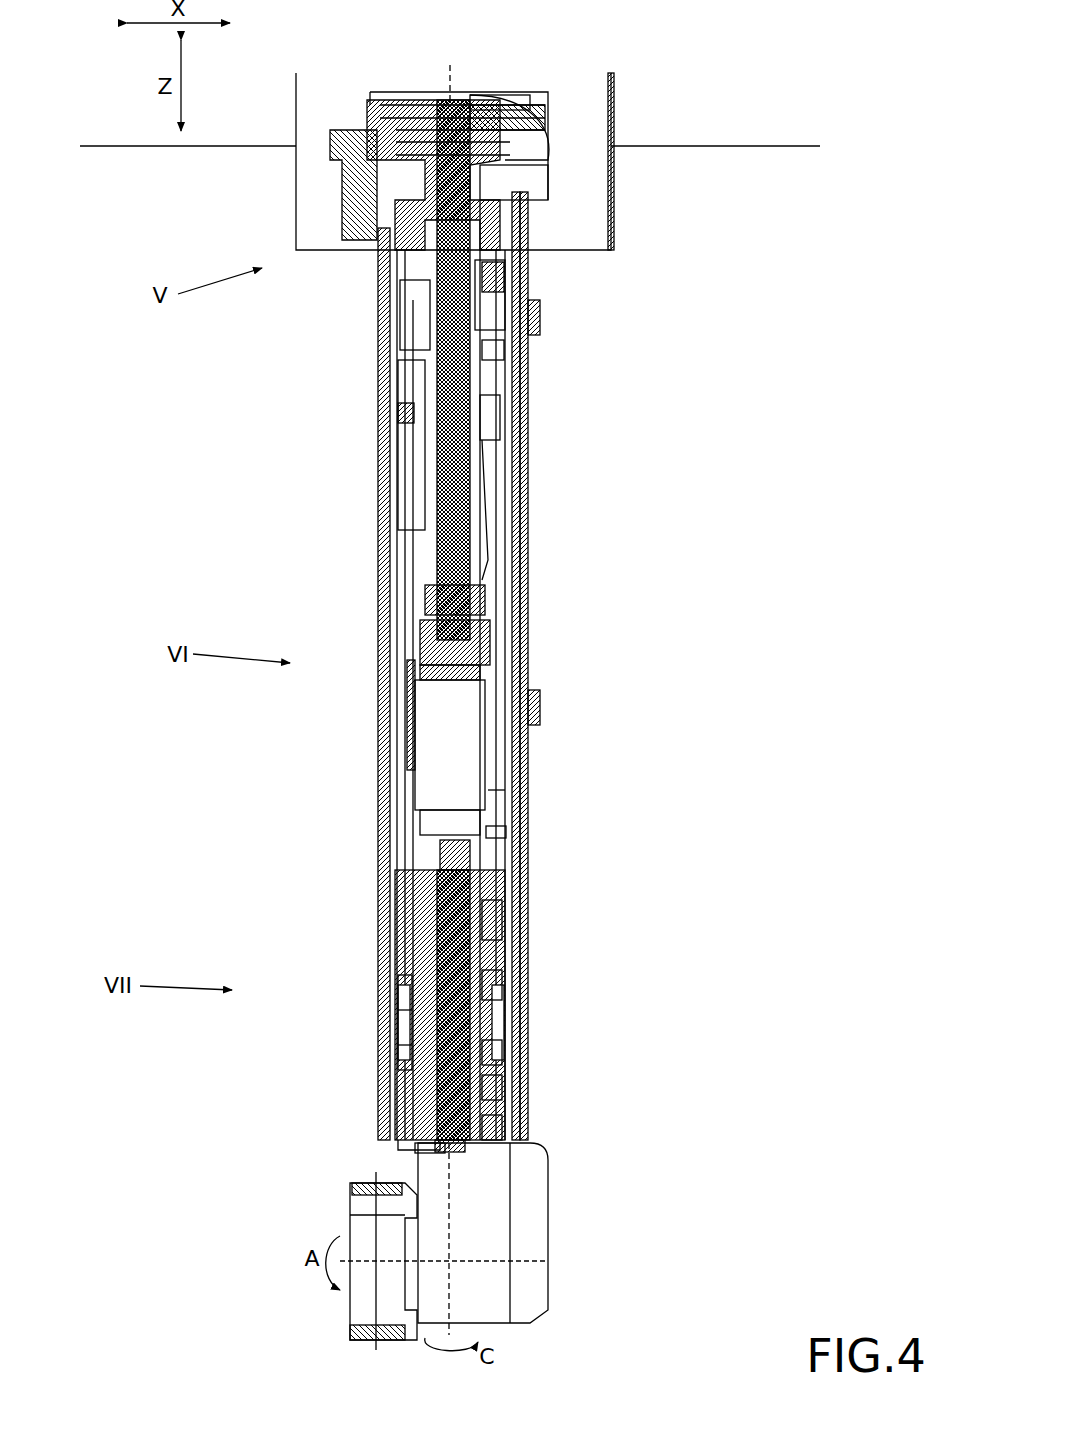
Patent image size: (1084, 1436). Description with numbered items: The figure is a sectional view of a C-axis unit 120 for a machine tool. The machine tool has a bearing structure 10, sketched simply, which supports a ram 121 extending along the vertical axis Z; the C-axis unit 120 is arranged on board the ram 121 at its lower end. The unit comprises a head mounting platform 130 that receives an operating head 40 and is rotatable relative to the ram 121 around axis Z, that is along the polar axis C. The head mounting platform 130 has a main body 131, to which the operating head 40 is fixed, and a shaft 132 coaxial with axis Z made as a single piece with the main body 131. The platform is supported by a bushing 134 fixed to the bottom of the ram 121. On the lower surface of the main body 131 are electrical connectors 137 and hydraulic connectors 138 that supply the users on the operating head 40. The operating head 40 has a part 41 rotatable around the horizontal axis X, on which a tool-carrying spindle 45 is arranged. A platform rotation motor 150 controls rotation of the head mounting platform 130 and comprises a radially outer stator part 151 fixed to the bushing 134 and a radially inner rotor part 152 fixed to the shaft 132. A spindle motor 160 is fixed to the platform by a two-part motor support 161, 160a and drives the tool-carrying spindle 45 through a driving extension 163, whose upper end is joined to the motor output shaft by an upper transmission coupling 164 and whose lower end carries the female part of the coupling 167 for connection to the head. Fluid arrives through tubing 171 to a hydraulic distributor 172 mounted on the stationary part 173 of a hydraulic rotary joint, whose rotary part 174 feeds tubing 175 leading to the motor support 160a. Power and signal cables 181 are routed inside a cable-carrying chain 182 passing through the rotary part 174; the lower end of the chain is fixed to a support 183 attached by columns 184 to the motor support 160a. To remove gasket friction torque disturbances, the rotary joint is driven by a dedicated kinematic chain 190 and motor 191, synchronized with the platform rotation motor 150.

The bearing structure 10 is at (181, 152).
The operating head 40 is at (554, 1247).
The part of the operating head 41 is at (348, 1305).
The tool-carrying spindle 45 is at (360, 1335).
The C-axis unit 120 is at (607, 1011).
The support group (ram) 121 is at (530, 508).
The head mounting platform 130 is at (368, 1111).
The main body 131 is at (528, 1083).
The shaft 132 is at (528, 950).
The bushing 134 is at (528, 985).
The electrical connectors 137 is at (405, 1148).
The hydraulic connectors 138 is at (528, 1130).
The platform rotation motor 150 is at (380, 990).
The stator part 151 is at (380, 1017).
The rotor part 152 is at (380, 1048).
The spindle motor 160 is at (408, 748).
The motor support 160a is at (507, 835).
The motor support 161 is at (528, 790).
The driving extension 163 is at (528, 930).
The upper transmission coupling 164 is at (490, 858).
The female part of the coupling 167 is at (528, 1050).
The tubing 171 is at (497, 172).
The hydraulic distributor 172 is at (505, 158).
The stationary part of the hydraulic rotary joint 173 is at (490, 270).
The rotary part of the rotary joint 174 is at (490, 350).
The tubing 175 is at (480, 475).
The power and signal cables 181 is at (525, 105).
The cable-carrying chain 182 is at (440, 270).
The support 183 is at (500, 622).
The columns 184 is at (490, 640).
The kinematic chain 190 is at (430, 112).
The motor 191 is at (345, 208).